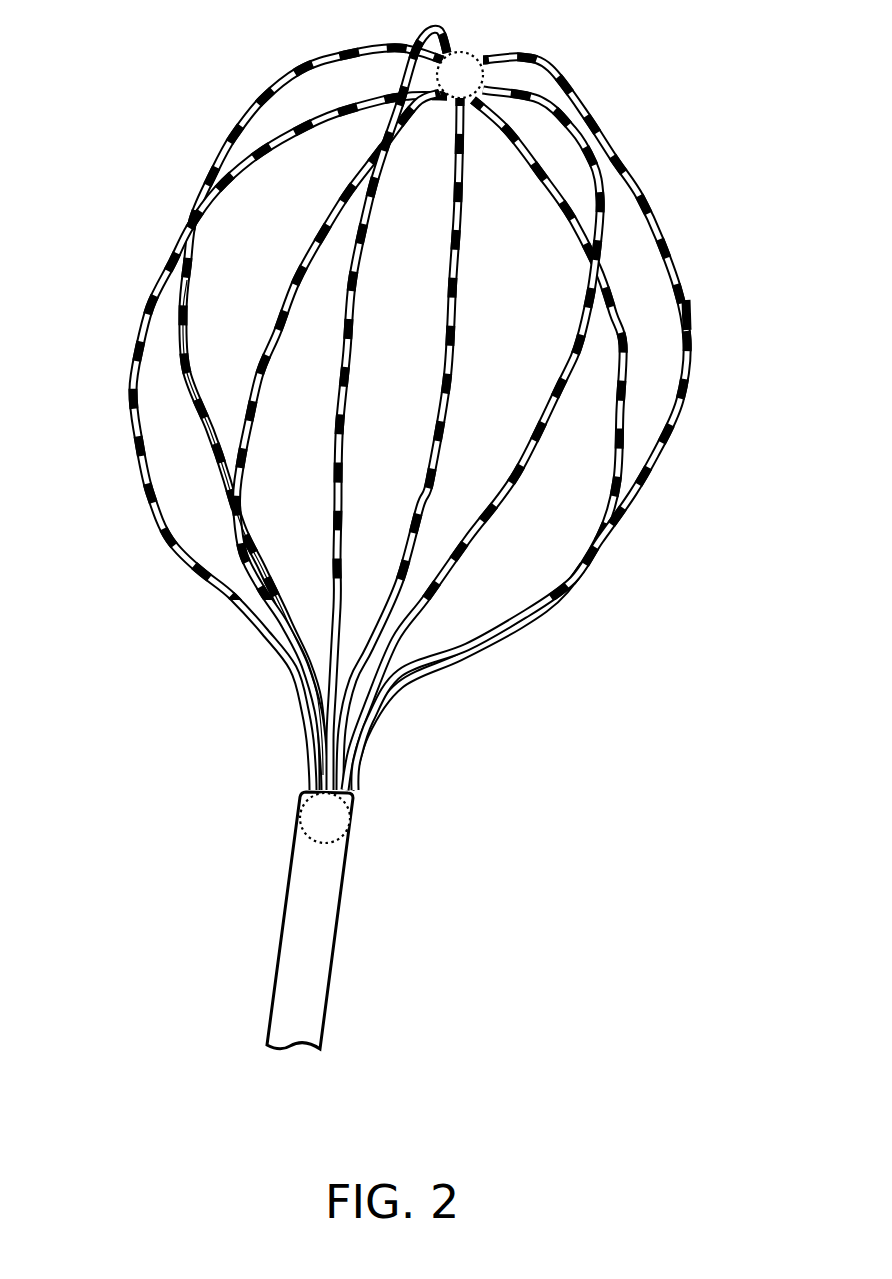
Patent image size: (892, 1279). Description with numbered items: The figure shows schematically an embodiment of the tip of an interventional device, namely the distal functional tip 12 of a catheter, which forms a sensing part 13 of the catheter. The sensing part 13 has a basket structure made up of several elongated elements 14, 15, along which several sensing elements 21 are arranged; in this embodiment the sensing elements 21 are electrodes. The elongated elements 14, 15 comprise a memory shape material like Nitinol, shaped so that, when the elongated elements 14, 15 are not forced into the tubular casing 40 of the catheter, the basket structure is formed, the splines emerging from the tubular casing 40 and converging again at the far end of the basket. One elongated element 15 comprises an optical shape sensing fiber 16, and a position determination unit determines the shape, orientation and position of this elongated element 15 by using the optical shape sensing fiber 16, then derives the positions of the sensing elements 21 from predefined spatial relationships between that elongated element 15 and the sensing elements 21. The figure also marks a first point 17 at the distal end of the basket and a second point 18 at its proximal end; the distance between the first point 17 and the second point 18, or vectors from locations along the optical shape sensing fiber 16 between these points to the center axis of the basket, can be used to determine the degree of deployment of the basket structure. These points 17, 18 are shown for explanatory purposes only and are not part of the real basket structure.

The distal functional tip 12 is at (436, 525).
The sensing part 13 is at (156, 636).
The elongated element 14 is at (641, 183).
The elongated element 15 is at (206, 178).
The optical shape sensing fiber 16 is at (298, 655).
The first point 17 is at (456, 68).
The second point 18 is at (340, 818).
The sensing element 21 is at (690, 310).
The tubular casing 40 is at (333, 964).